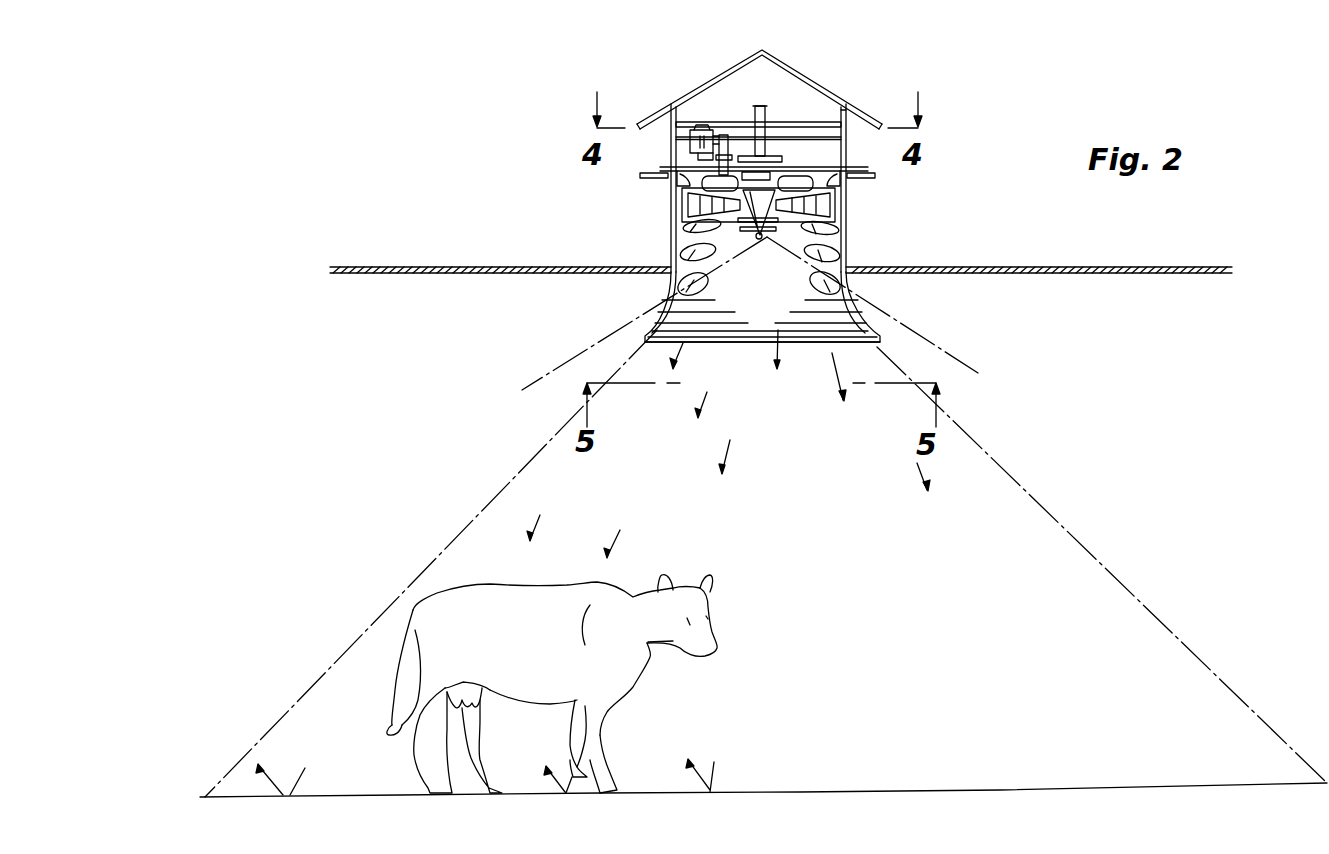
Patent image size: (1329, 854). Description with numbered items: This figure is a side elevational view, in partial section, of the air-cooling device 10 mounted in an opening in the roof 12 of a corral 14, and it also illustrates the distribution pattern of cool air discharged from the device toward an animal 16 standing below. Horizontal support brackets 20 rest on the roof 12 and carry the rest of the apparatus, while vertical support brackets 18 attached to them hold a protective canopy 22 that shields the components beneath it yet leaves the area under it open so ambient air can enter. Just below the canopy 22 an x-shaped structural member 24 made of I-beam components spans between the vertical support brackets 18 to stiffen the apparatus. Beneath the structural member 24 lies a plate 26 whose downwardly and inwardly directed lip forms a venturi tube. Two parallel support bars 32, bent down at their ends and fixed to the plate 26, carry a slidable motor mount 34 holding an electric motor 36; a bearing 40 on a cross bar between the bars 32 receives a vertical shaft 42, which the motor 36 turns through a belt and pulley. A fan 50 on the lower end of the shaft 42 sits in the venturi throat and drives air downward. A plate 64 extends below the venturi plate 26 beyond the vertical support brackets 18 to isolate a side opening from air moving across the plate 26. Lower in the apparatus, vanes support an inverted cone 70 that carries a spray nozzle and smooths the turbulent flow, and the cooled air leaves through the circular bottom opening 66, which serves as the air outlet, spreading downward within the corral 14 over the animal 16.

The device 10 is at (903, 50).
The roof 12 is at (1043, 266).
The corral 14 is at (997, 548).
The animal 16 is at (630, 597).
The vertical support brackets 18 is at (673, 228).
The horizontal support brackets 20 is at (783, 125).
The protective canopy 22 is at (781, 63).
The x-shaped structural member 24 is at (810, 140).
The plate 26 is at (800, 186).
The support bars 32 is at (820, 168).
The motor mount 34 is at (730, 135).
The electric motor 36 is at (690, 141).
The bearing 40 is at (783, 159).
The shaft 42 is at (762, 140).
The fan 50 is at (798, 190).
The plate 64 is at (642, 178).
The bottom opening 66 is at (822, 340).
The inverted cone 70 is at (752, 233).